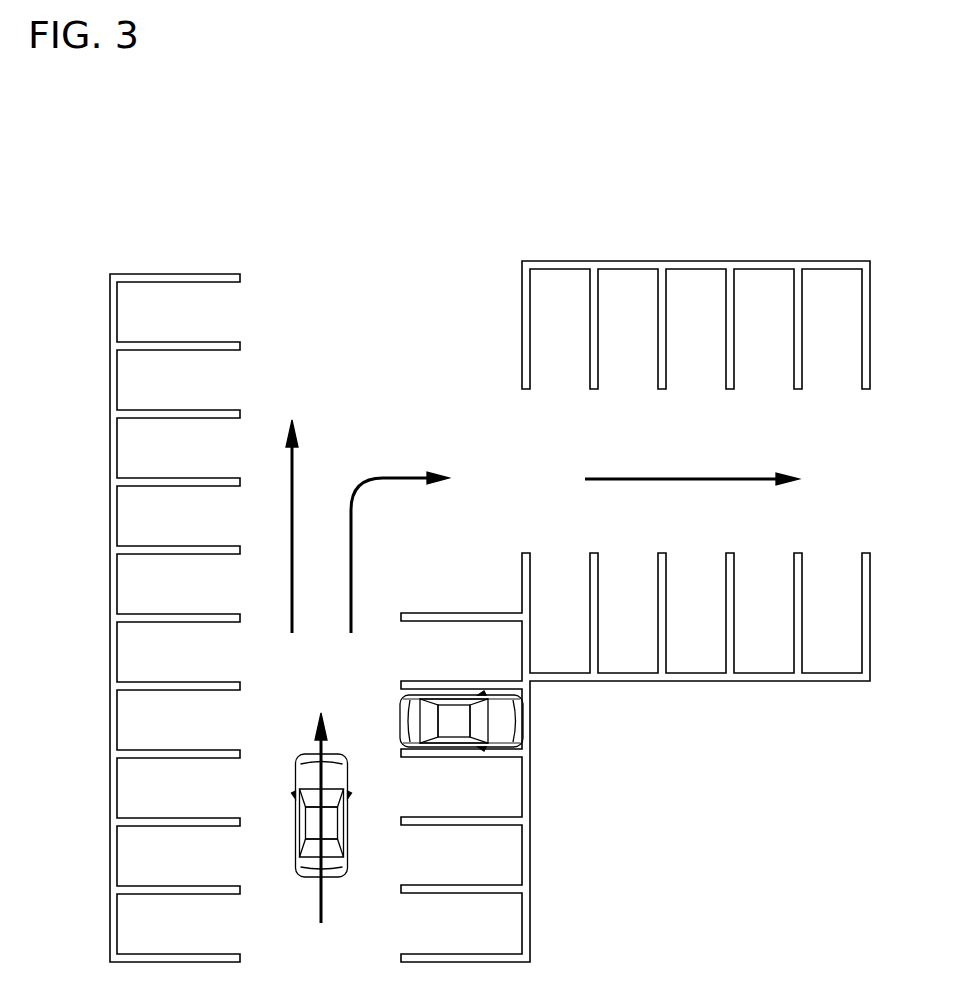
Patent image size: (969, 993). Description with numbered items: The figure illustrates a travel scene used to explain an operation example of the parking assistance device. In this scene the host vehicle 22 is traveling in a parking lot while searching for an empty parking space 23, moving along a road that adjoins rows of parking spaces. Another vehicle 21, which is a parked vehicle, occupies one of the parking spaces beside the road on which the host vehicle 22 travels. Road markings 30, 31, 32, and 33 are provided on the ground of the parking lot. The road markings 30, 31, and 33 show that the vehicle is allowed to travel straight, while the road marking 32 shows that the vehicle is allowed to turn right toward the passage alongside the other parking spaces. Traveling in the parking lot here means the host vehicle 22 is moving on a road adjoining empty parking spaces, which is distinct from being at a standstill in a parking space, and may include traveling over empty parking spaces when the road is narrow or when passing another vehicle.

The another vehicle 21 is at (517, 723).
The host vehicle 22 is at (334, 880).
The empty parking space 23 is at (122, 790).
The road marking 30 is at (323, 742).
The road marking 31 is at (290, 573).
The road marking 32 is at (353, 576).
The road marking 33 is at (668, 477).